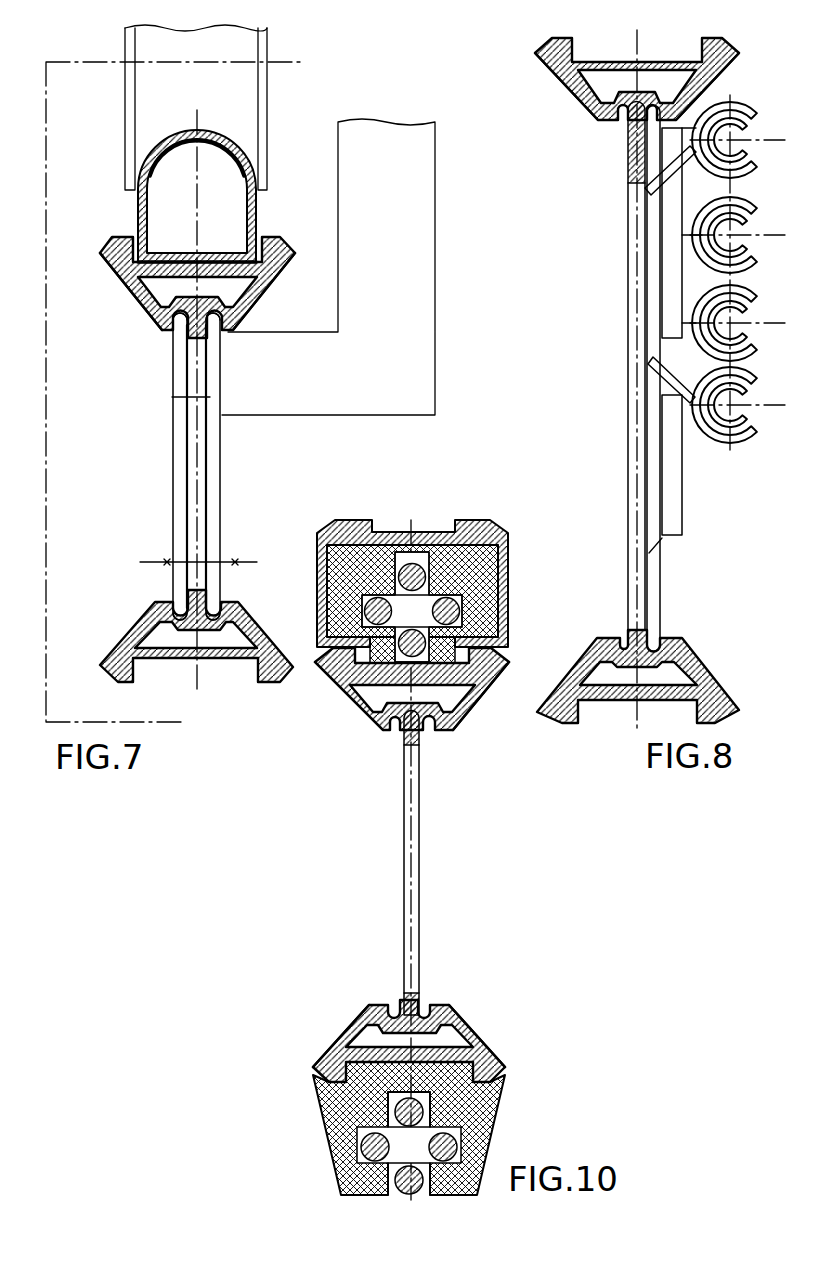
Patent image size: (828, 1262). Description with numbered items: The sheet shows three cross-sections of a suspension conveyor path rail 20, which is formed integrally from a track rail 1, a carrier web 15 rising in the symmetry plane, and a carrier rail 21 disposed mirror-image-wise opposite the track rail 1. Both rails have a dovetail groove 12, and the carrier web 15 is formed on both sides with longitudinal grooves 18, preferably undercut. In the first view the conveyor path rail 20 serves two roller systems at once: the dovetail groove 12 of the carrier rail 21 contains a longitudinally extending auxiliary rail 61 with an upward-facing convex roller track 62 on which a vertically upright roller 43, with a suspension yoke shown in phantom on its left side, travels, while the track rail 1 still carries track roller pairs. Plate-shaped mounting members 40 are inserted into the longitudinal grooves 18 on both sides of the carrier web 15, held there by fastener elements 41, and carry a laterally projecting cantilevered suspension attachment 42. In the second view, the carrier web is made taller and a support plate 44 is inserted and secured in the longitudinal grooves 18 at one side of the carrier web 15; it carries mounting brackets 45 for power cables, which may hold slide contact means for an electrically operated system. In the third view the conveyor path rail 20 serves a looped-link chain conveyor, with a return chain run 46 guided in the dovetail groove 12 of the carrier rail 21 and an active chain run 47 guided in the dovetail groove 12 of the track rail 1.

In FIG. 7, the track rail 1 is at (114, 615).
In FIG. 8, the track rail 1 is at (718, 656).
In FIG. 10, the track rail 1 is at (480, 1002).
In FIG. 7, the dovetail groove 12 is at (262, 237).
In FIG. 8, the dovetail groove 12 is at (637, 79).
In FIG. 10, the dovetail groove 12 is at (368, 537).
In FIG. 7, the carrier web 15 is at (207, 475).
In FIG. 8, the carrier web 15 is at (628, 205).
In FIG. 7, the longitudinal grooves 18 is at (173, 343).
In FIG. 8, the longitudinal grooves 18 is at (618, 117).
In FIG. 7, the conveyor path rail 20 is at (162, 437).
In FIG. 8, the conveyor path rail 20 is at (616, 335).
In FIG. 10, the conveyor path rail 20 is at (388, 806).
In FIG. 7, the carrier rail 21 is at (270, 287).
In FIG. 8, the carrier rail 21 is at (562, 87).
In FIG. 10, the carrier rail 21 is at (482, 700).
In FIG. 7, the mounting members 40 is at (177, 415).
In FIG. 7, the fastener elements 41 is at (236, 560).
In FIG. 7, the suspension attachment 42 is at (355, 372).
In FIG. 7, the roller 43 is at (233, 103).
In FIG. 8, the support plate 44 is at (663, 608).
In FIG. 8, the mounting brackets 45 is at (765, 268).
In FIG. 10, the return chain run 46 is at (512, 557).
In FIG. 10, the active chain run 47 is at (497, 1060).
In FIG. 7, the auxiliary rail 61 is at (247, 213).
In FIG. 7, the roller track 62 is at (155, 145).